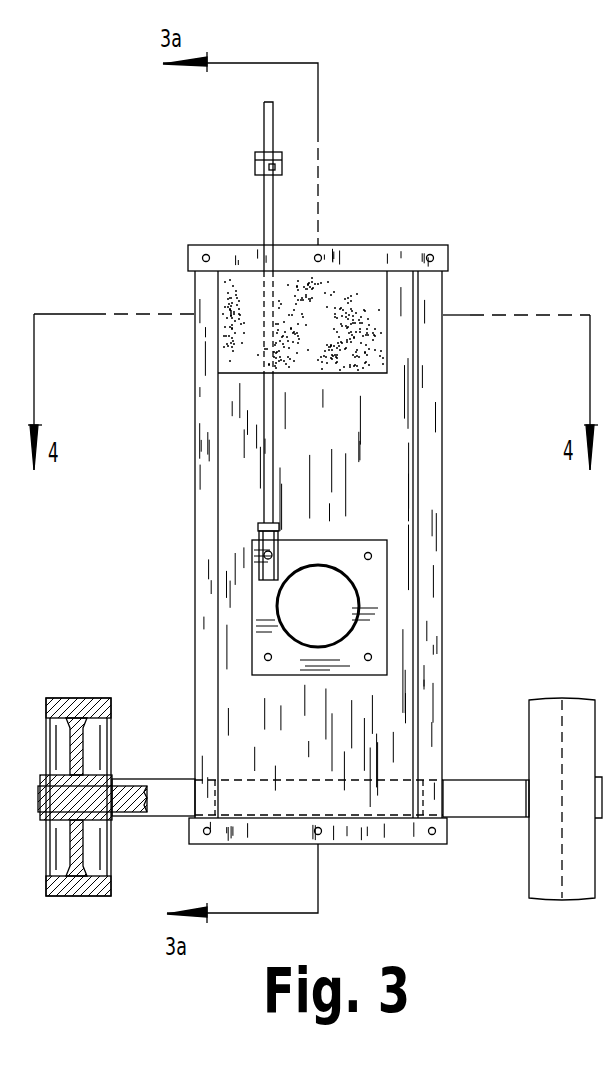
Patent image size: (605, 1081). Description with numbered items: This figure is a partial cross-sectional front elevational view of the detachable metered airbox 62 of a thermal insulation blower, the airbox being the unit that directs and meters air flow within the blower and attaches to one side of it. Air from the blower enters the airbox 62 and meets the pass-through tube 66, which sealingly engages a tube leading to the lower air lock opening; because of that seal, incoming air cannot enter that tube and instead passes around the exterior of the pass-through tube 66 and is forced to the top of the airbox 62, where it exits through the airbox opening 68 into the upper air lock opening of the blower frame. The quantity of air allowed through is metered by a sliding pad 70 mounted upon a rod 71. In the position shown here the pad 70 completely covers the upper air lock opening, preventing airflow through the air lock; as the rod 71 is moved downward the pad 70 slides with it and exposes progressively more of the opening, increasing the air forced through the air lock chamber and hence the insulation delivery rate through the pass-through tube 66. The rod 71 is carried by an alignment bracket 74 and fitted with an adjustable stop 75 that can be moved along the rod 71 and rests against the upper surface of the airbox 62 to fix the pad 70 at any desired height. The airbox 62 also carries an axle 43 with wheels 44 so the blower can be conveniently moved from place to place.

The metered airbox 62 is at (414, 200).
The airbox opening 68 is at (205, 362).
The sliding pad 70 is at (387, 345).
The rod 71 is at (262, 442).
The adjustable stop 75 is at (255, 165).
The alignment bracket 74 is at (280, 530).
The pass-through tube 66 is at (387, 600).
The axle 43 is at (140, 817).
The wheels 44 is at (97, 896).